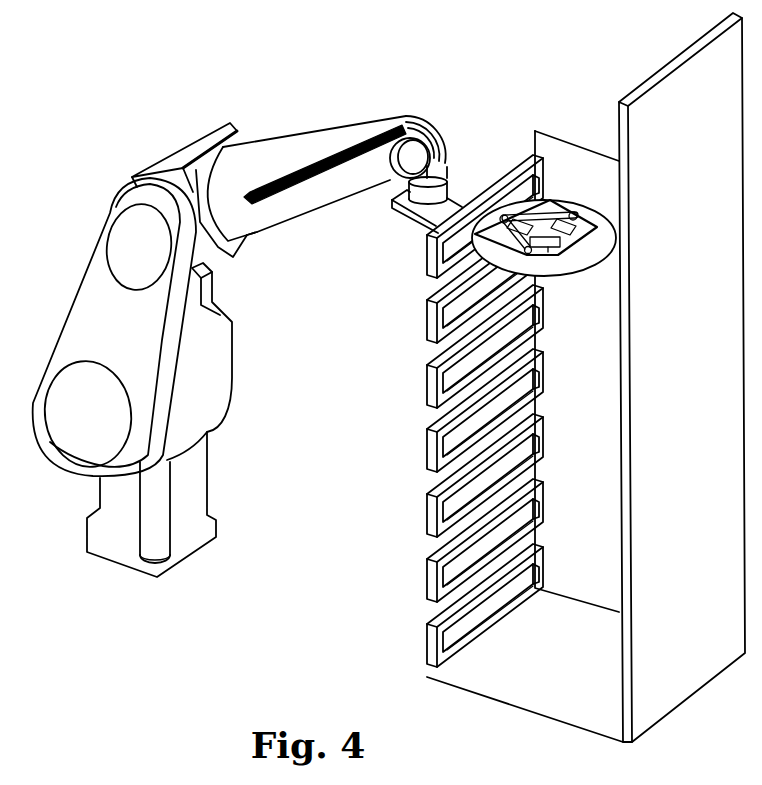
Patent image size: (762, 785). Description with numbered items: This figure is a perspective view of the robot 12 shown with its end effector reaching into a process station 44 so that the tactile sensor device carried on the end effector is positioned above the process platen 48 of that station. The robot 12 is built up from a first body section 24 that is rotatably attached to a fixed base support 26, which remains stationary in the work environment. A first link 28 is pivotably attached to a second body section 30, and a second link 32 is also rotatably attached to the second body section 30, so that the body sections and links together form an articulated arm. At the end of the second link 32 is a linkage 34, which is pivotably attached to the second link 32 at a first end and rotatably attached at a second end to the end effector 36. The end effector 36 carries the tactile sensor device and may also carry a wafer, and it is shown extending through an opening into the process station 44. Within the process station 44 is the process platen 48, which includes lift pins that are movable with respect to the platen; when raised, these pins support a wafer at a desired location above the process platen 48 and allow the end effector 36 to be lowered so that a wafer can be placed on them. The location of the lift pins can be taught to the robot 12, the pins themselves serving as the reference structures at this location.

The robot 12 is at (152, 523).
The first body section 24 is at (230, 362).
The fixed base support 26 is at (193, 540).
The first link 28 is at (107, 314).
The second body section 30 is at (192, 142).
The second link 32 is at (345, 162).
The linkage 34 is at (447, 190).
The end effector 36 is at (470, 203).
The process station 44 is at (569, 134).
The process platen 48 is at (567, 265).